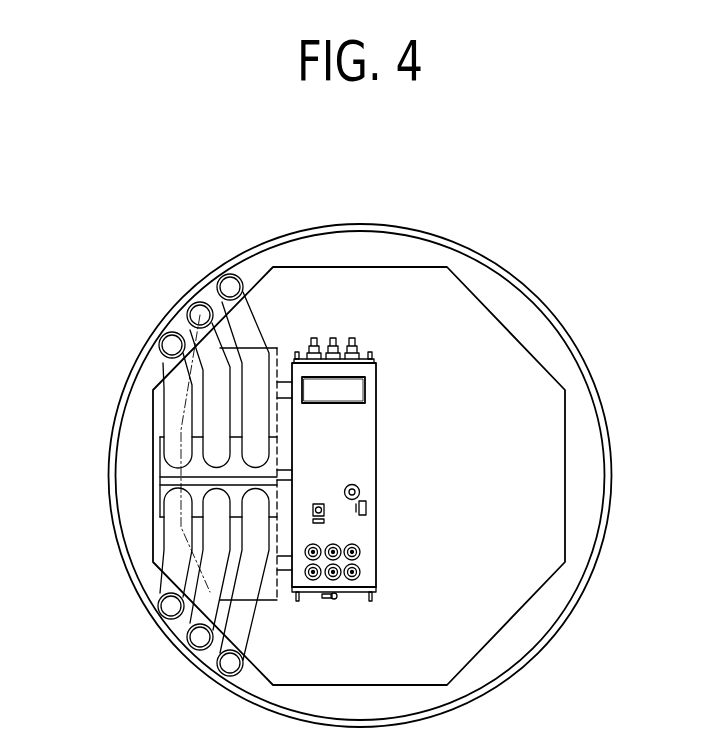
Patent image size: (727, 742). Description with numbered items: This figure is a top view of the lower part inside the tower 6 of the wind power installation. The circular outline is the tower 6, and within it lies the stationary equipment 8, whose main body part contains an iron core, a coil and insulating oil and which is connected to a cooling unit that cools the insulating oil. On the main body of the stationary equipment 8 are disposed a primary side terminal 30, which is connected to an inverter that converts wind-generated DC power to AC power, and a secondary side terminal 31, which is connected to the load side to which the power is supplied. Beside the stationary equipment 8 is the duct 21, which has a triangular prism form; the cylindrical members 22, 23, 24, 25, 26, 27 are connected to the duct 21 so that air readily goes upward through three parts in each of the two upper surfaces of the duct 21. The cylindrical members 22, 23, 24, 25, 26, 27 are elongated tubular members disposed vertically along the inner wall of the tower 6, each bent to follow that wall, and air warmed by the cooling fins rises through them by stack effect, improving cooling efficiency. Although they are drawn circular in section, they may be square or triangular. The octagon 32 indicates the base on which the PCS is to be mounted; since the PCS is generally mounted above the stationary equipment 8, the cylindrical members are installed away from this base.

The tower 6 is at (492, 262).
The stationary equipment 8 is at (474, 465).
The duct 21 is at (167, 470).
The cylindrical member 22 is at (230, 663).
The cylindrical member 23 is at (200, 637).
The cylindrical member 24 is at (171, 606).
The cylindrical member 25 is at (172, 345).
The cylindrical member 26 is at (200, 315).
The cylindrical member 27 is at (230, 287).
The primary side terminal 30 is at (362, 552).
The secondary side terminal 31 is at (357, 345).
The octagon 32 is at (567, 525).